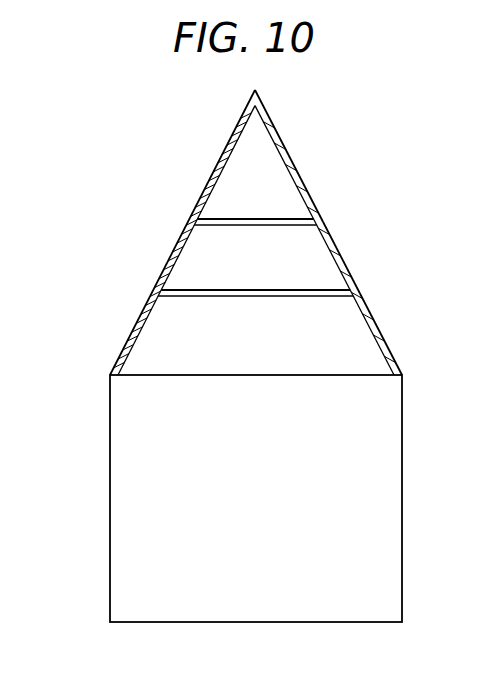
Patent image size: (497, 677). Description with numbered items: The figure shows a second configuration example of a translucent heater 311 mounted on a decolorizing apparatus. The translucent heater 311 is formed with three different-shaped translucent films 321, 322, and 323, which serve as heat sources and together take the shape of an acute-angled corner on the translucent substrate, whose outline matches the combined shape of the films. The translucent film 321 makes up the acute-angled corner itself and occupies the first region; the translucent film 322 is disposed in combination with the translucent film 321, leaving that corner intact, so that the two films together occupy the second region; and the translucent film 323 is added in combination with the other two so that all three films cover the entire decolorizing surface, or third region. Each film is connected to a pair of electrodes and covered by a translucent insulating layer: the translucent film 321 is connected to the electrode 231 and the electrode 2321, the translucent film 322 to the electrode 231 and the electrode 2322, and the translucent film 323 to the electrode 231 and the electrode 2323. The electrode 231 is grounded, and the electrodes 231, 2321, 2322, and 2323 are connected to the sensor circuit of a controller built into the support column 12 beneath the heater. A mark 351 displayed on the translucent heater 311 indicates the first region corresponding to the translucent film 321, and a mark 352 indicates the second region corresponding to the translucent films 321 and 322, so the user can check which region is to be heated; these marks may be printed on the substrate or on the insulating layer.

The support column 12 is at (120, 494).
The translucent heater 311 is at (90, 95).
The electrode 231 is at (232, 150).
The translucent film 321 is at (262, 147).
The translucent film 322 is at (310, 243).
The translucent film 323 is at (352, 328).
The electrode 2321 is at (297, 180).
The electrode 2322 is at (347, 273).
The electrode 2323 is at (385, 342).
The mark 351 is at (218, 222).
The mark 352 is at (218, 291).